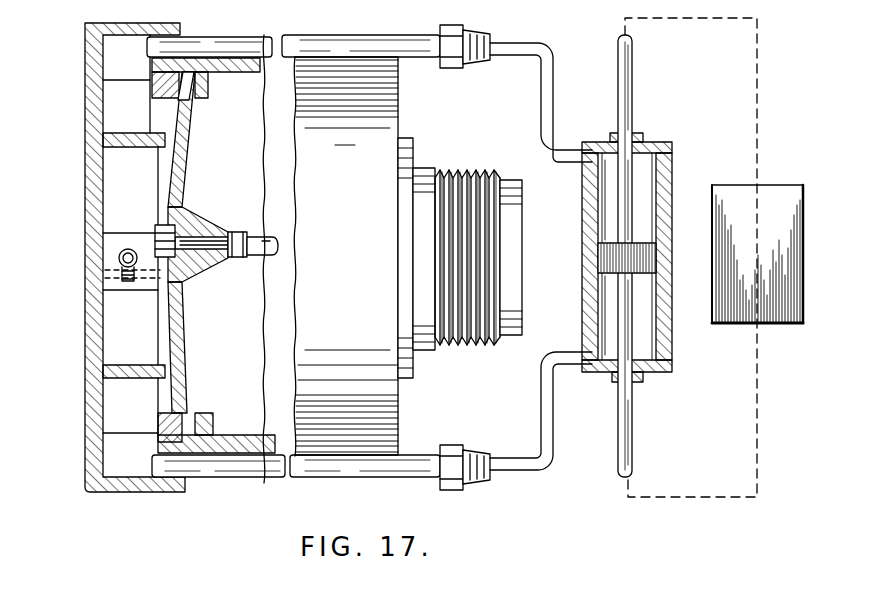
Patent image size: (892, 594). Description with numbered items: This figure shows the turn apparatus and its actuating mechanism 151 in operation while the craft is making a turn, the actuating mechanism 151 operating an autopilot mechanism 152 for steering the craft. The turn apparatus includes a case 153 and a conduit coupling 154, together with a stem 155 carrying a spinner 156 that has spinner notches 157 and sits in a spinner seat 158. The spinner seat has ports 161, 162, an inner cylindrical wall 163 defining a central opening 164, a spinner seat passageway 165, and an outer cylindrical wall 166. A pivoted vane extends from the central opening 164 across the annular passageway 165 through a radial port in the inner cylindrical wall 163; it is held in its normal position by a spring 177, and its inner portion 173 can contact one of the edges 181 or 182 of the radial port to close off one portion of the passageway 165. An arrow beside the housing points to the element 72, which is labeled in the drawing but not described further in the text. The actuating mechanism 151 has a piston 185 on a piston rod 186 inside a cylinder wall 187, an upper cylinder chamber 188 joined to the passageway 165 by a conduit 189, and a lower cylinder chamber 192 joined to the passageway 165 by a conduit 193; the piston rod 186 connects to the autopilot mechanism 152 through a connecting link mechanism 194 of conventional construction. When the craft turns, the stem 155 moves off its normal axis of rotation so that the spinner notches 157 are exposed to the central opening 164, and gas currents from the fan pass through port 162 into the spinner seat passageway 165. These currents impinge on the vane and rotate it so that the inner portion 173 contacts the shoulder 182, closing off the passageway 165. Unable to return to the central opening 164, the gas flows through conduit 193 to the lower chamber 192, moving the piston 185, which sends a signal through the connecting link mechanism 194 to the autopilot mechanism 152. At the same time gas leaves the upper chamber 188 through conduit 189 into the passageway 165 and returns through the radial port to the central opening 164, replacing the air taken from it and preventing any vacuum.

The set screw 72 is at (100, 247).
The actuating mechanism 151 is at (690, 182).
The autopilot mechanism 152 is at (781, 323).
The case 153 is at (392, 135).
The conduit coupling 154 is at (458, 182).
The stem 155 is at (255, 236).
The spinner 156 is at (180, 167).
The spinner notches 157 is at (180, 112).
The spinner seat 158 is at (148, 80).
The spinner seat port 161 is at (160, 107).
The spinner seat port 162 is at (168, 398).
The inner cylindrical wall 163 is at (110, 118).
The central opening 164 is at (110, 192).
The spinner seat passageway 165 is at (100, 103).
The outer cylindrical wall 166 is at (182, 484).
The inner portion 173 is at (110, 262).
The spring 177 is at (137, 286).
The edge 181 is at (131, 236).
The edge 182 is at (178, 283).
The piston 185 is at (658, 263).
The piston rod 186 is at (631, 82).
The cylinder wall 187 is at (584, 218).
The upper cylinder chamber 188 is at (652, 157).
The conduit 189 is at (388, 38).
The lower cylinder chamber 192 is at (655, 335).
The conduit 193 is at (377, 470).
The connecting link mechanism 194 is at (696, 498).